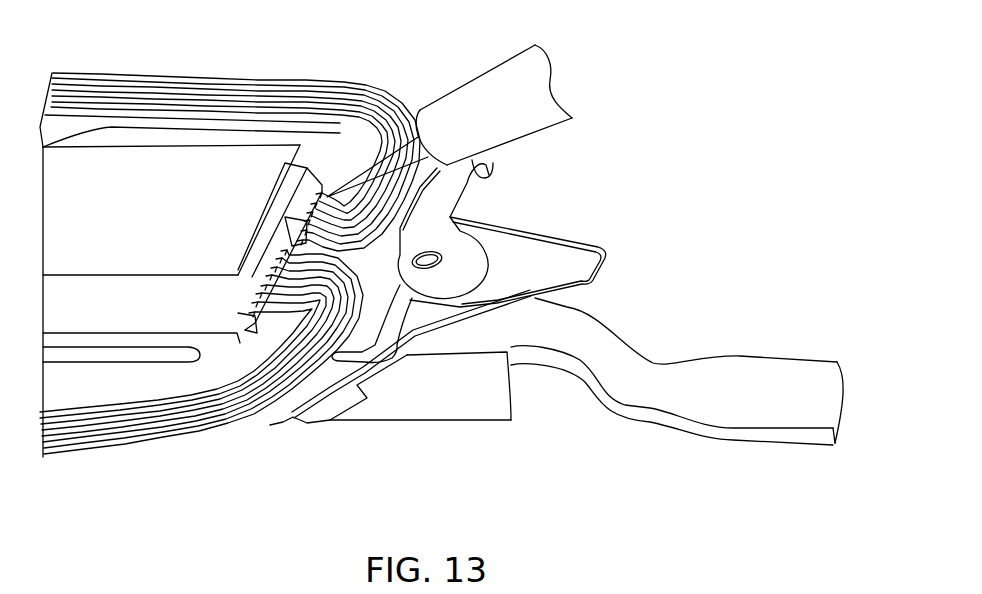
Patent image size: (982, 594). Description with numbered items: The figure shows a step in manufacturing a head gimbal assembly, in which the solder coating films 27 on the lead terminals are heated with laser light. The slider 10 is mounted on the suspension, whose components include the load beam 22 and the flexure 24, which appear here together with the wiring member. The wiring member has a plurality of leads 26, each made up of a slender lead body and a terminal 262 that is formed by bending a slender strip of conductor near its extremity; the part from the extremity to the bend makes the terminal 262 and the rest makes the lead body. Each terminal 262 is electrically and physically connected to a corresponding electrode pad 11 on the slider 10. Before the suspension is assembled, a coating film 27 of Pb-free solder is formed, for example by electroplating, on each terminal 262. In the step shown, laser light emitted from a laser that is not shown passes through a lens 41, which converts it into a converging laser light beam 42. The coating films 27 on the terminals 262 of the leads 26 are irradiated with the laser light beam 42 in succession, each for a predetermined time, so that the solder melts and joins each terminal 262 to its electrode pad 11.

The slider 10 is at (115, 136).
The electrode pads 11 is at (250, 302).
The load beam 22 is at (457, 424).
The flexure 24 is at (585, 232).
The leads 26 is at (238, 78).
The coating film 27 is at (285, 384).
The terminal 262 is at (250, 312).
The lens 41 is at (467, 82).
The laser light beam 42 is at (355, 168).